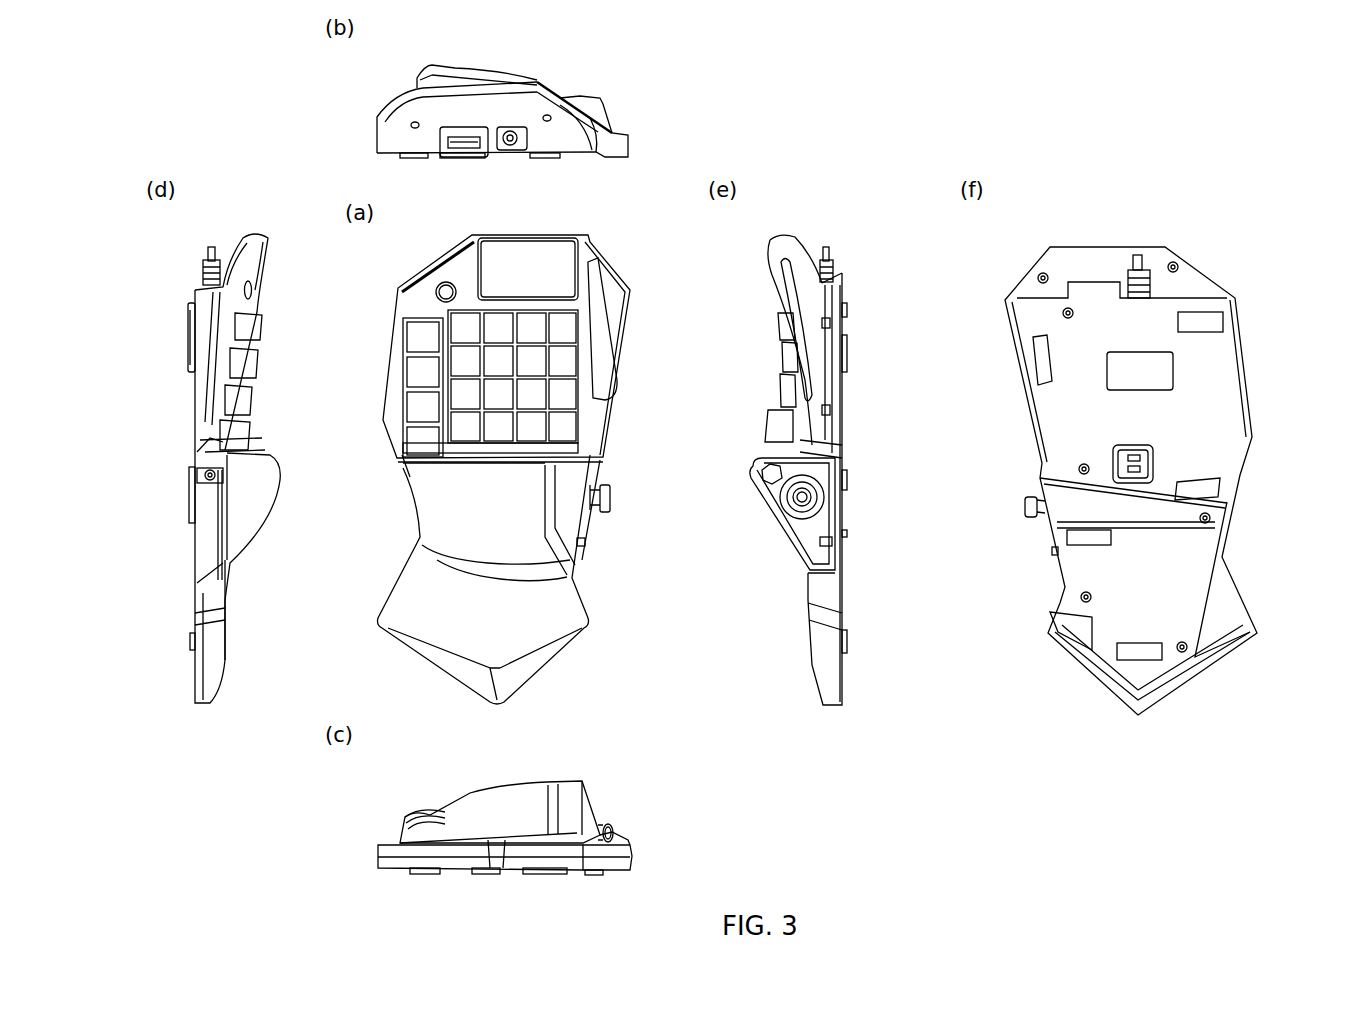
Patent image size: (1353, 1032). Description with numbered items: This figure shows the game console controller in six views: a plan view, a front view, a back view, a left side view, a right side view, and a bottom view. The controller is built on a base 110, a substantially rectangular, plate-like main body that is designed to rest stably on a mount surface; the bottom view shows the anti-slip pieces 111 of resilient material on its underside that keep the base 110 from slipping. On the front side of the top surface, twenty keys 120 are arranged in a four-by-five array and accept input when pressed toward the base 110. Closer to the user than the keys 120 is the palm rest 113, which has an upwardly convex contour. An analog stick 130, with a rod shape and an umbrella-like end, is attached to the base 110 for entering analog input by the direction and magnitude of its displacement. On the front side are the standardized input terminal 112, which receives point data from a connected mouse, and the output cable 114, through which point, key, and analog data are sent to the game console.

The base 110 is at (395, 118).
The anti-slip pieces 111 is at (525, 160).
The input terminal 112 is at (465, 150).
The palm rest 113 is at (500, 76).
The output cable 114 is at (513, 143).
The keys 120 is at (535, 392).
The analog stick 130 is at (607, 500).